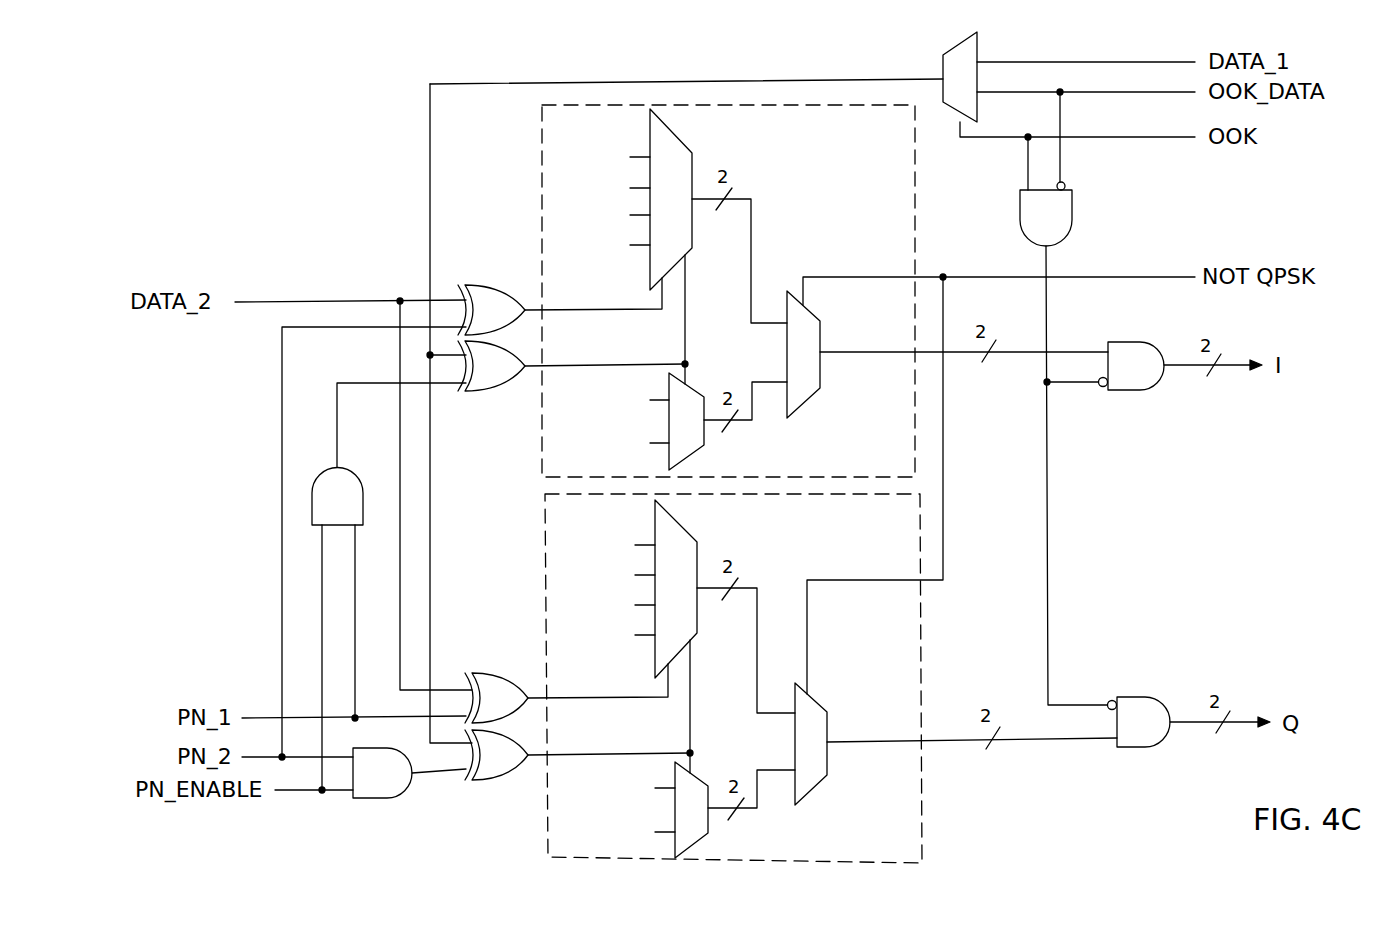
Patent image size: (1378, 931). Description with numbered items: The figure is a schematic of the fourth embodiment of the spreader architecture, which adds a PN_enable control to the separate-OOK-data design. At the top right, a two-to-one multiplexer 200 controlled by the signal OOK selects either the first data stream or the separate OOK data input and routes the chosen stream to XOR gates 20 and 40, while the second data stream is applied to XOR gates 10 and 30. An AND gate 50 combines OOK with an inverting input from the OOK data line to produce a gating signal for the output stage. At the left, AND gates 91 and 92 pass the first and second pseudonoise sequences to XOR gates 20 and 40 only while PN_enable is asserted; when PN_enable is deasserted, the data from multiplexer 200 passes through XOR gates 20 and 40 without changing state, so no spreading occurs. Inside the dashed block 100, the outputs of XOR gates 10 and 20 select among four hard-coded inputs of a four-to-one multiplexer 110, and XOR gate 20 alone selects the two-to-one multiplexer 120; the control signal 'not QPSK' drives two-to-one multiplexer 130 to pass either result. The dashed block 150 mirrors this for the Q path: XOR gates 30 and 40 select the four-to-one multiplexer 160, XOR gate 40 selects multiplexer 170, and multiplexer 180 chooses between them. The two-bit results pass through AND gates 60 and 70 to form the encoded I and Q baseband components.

The XOR gate 10 is at (480, 285).
The XOR gate 20 is at (480, 392).
The XOR gate 30 is at (485, 673).
The XOR gate 40 is at (485, 780).
The AND gate 50 is at (1083, 188).
The AND gate 60 is at (1122, 342).
The AND gate 70 is at (1130, 697).
The AND gate 91 is at (345, 467).
The AND gate 92 is at (400, 797).
The multiplexer block 100 is at (540, 165).
The 4-to-1 multiplexer 110 is at (692, 152).
The 2-to-1 multiplexer 120 is at (704, 446).
The 2-to-1 multiplexer 130 is at (820, 318).
The multiplexer block 150 is at (922, 805).
The 4-to-1 multiplexer 160 is at (697, 540).
The 2-to-1 multiplexer 170 is at (708, 834).
The 2-to-1 multiplexer 180 is at (827, 710).
The 2-to-1 multiplexer 200 is at (943, 58).